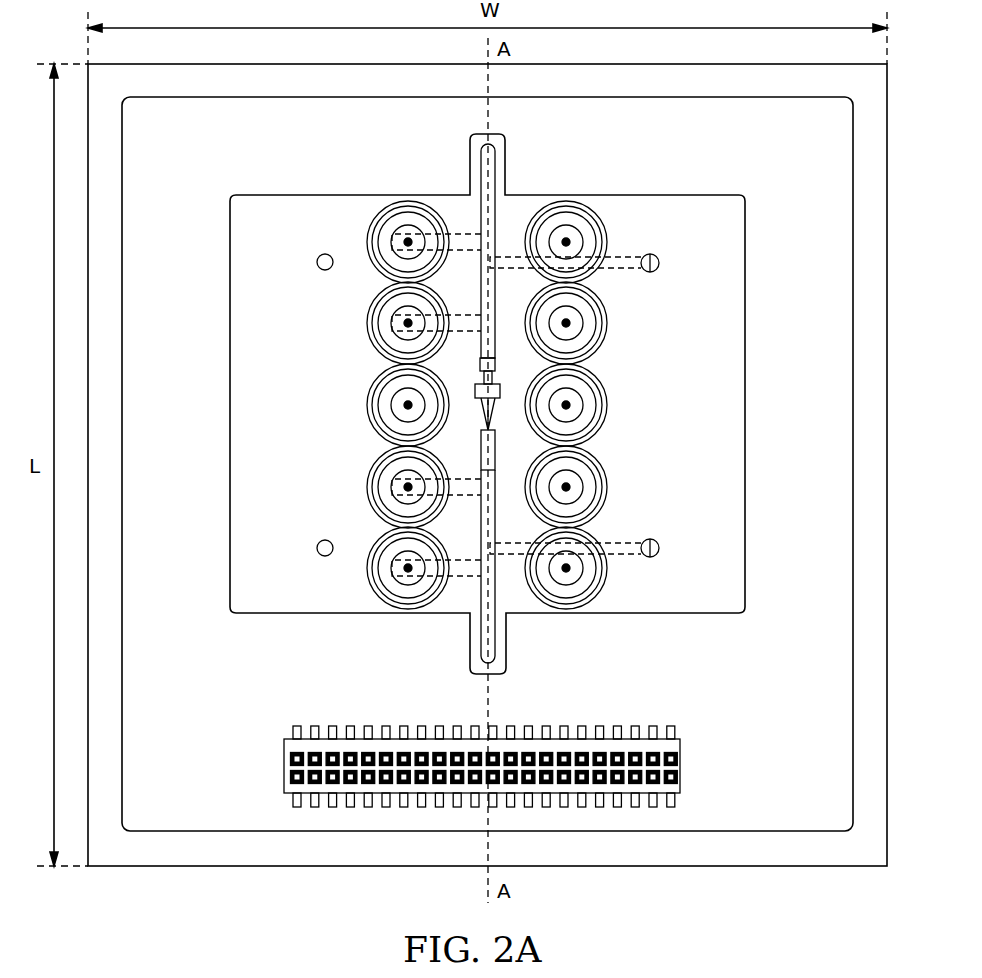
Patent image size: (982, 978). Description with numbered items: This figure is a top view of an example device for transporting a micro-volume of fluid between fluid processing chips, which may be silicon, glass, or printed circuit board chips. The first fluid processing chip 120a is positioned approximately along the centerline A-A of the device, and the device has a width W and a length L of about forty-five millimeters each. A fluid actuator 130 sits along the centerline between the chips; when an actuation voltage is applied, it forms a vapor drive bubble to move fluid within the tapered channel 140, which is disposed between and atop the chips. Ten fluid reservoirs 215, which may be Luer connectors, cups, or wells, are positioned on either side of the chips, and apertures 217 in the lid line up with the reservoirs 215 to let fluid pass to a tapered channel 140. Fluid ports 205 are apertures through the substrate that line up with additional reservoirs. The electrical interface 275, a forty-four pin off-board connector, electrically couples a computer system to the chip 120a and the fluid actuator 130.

The first fluid processing chip 120a is at (482, 212).
The fluid actuator 130 is at (500, 390).
The tapered channel 140 is at (652, 273).
The fluid port 205 is at (317, 262).
The fluid reservoir 215 is at (606, 232).
The aperture 217 is at (568, 323).
The electrical interface 275 is at (636, 727).